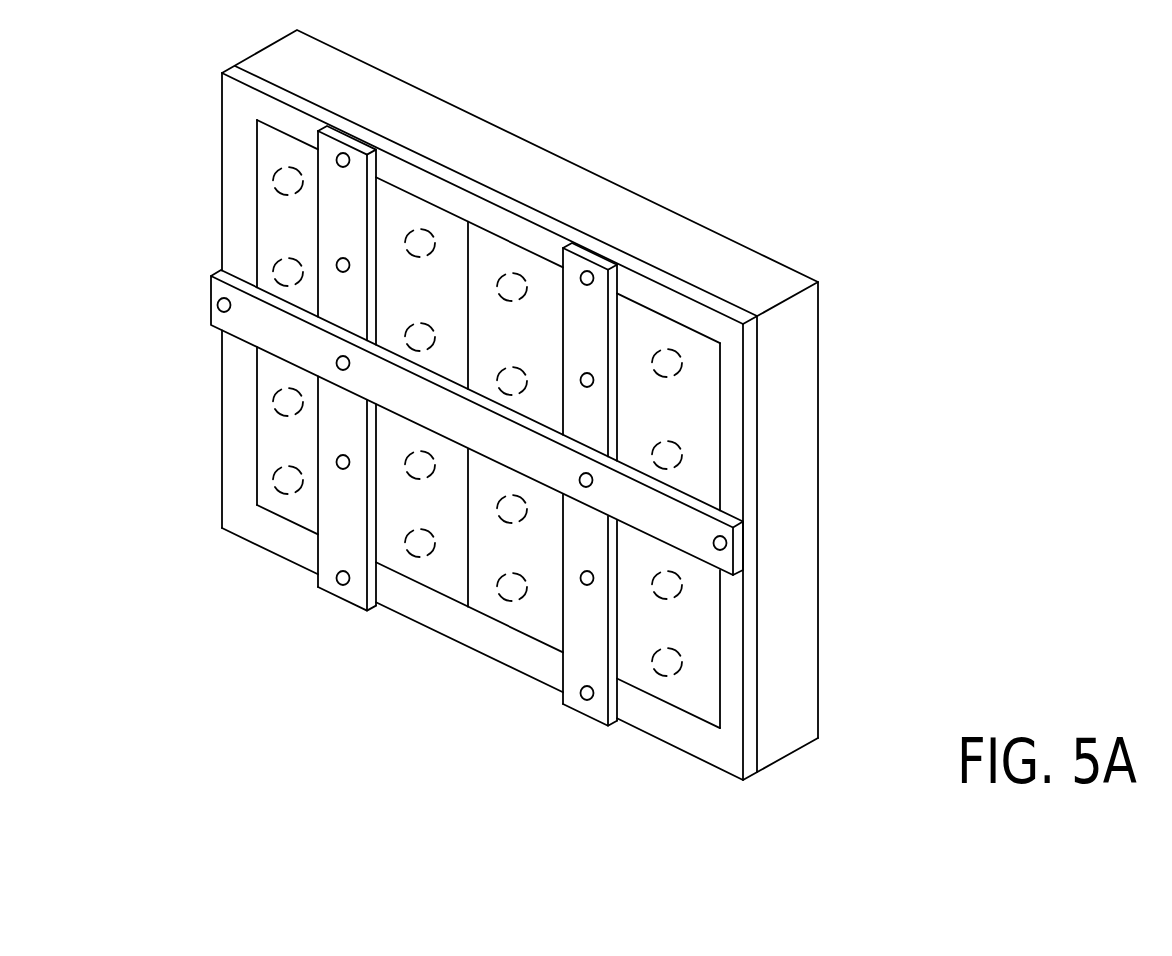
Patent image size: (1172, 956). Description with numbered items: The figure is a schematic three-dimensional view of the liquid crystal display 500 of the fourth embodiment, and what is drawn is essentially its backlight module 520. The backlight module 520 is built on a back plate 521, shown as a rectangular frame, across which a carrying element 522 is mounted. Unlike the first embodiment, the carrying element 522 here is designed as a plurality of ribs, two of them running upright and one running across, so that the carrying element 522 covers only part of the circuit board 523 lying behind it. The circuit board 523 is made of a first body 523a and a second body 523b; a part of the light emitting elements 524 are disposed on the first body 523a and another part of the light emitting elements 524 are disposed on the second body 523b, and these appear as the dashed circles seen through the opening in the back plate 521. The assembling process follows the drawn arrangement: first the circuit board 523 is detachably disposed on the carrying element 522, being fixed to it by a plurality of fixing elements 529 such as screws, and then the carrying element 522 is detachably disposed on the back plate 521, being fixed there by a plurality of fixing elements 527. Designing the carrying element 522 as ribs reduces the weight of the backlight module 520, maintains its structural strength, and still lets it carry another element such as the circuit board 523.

The liquid crystal display 500 is at (927, 698).
The backlight module 520 is at (174, 198).
The back plate 521 is at (467, 198).
The carrying element 522 is at (358, 195).
The circuit board 523 is at (640, 421).
The first body 523a is at (683, 412).
The second body 523b is at (443, 490).
The light emitting elements 524 is at (683, 362).
The fixing elements 527 is at (592, 275).
The fixing elements 529 is at (592, 380).